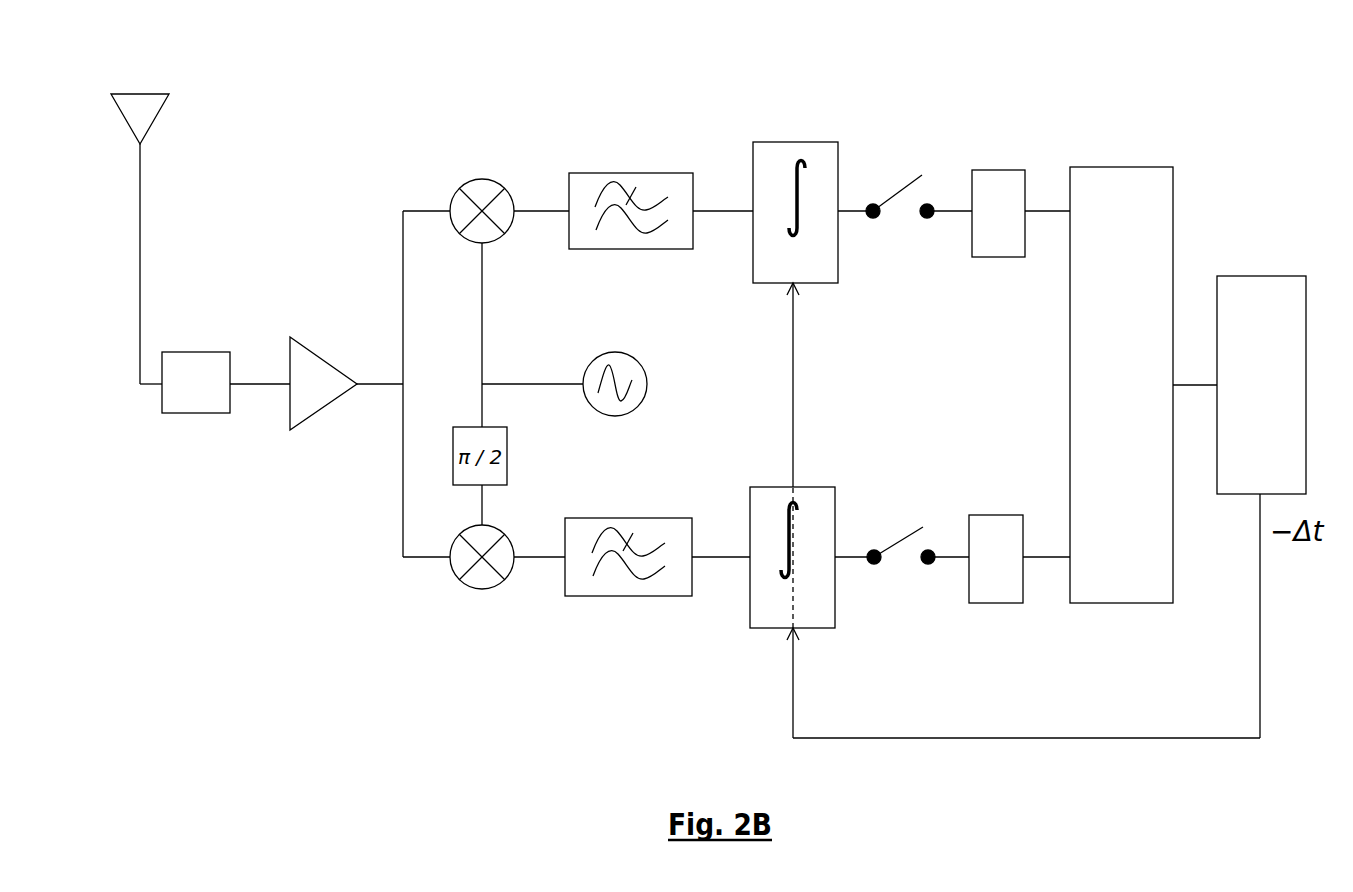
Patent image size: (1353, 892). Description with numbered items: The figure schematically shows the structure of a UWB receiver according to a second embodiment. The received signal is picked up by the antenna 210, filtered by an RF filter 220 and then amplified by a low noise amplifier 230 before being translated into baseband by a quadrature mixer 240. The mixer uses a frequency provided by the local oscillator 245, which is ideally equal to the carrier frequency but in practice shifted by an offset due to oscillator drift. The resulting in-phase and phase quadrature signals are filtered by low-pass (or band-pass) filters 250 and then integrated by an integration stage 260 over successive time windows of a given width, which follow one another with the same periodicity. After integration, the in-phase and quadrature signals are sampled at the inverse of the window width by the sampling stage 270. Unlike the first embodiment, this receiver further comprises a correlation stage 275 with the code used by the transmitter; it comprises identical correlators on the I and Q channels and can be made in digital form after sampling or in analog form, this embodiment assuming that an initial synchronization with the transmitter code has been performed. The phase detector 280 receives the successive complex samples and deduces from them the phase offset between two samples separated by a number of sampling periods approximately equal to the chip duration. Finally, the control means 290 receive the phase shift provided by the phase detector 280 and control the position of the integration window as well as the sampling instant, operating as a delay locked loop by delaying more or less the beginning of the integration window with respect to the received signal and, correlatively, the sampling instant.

The antenna 210 is at (155, 94).
The RF filter 220 is at (192, 352).
The low noise amplifier 230 is at (320, 357).
The quadrature mixer 240 is at (470, 172).
The local oscillator 245 is at (638, 362).
The low-pass filters 250 is at (623, 173).
The integration stage 260 is at (773, 142).
The sampling stage 270 is at (900, 188).
The correlation stage 275 is at (995, 170).
The phase detector 280 is at (1107, 167).
The control means 290 is at (1251, 276).